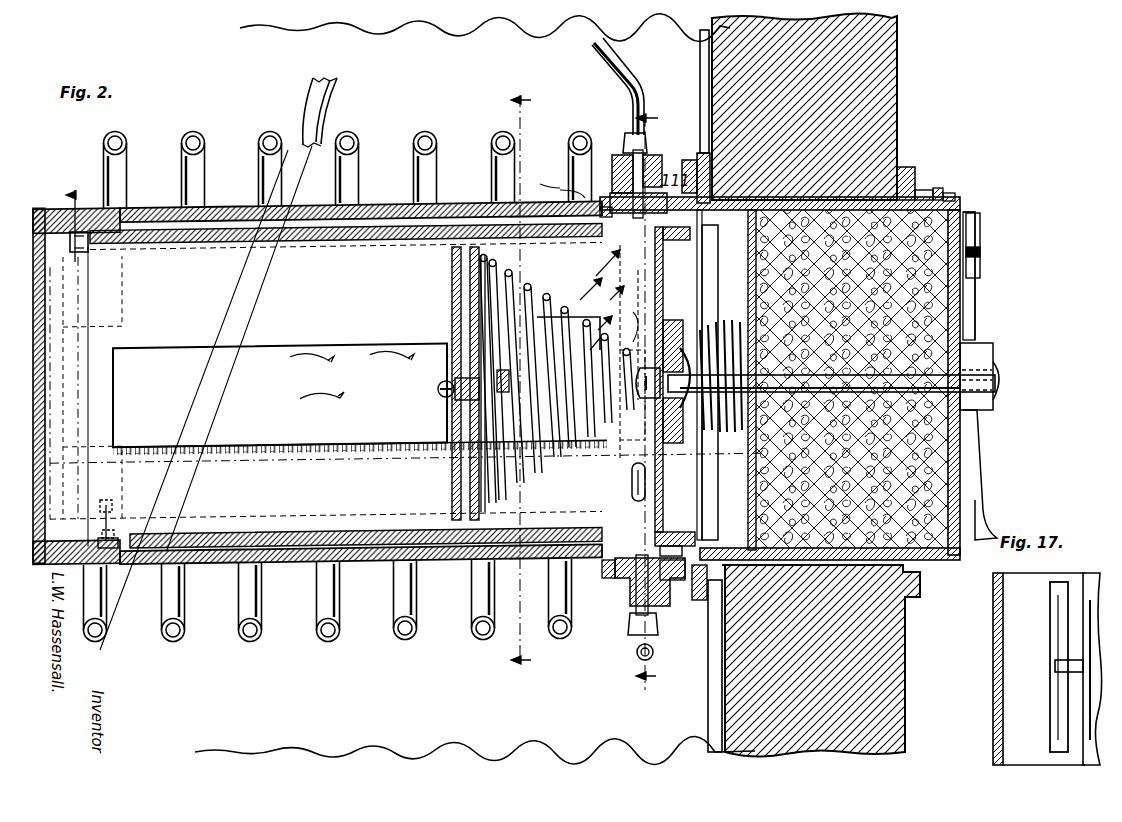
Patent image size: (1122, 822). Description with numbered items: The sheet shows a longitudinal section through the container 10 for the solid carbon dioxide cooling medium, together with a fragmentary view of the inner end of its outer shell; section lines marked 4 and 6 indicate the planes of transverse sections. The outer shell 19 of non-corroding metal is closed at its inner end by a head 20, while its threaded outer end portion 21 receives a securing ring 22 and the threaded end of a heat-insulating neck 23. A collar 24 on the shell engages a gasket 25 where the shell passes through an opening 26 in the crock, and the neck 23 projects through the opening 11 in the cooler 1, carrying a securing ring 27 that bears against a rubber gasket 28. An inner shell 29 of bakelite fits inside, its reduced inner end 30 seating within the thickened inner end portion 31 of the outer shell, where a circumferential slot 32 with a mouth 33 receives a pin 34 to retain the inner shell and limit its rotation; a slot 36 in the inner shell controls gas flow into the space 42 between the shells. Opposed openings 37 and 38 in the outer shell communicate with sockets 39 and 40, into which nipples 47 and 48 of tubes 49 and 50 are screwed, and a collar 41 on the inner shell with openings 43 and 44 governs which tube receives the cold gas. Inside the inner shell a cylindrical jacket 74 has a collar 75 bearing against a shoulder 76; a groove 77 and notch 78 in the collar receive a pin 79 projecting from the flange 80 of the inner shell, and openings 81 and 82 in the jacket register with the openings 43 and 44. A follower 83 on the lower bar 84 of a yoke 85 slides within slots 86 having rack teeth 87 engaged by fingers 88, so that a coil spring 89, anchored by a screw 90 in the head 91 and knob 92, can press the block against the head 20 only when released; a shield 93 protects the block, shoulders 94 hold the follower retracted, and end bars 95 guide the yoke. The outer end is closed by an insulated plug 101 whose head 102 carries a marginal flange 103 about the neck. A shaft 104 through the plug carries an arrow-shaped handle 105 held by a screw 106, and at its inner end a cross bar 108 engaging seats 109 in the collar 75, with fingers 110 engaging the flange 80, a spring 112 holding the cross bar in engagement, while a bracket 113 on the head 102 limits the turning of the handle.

In FIG. 2, the cooler 1 is at (890, 58).
In FIG. 2, the section line 4- 4 is at (521, 383).
In FIG. 2, the section line 6- 6 is at (655, 403).
In FIG. 2, the container 10 is at (77, 216).
In FIG. 2, the opening 11 is at (905, 600).
In FIG. 2, the outer shell 19 is at (462, 204).
In FIG. 17, the outer shell 19 is at (1090, 579).
In FIG. 17, the head 20 is at (993, 718).
In FIG. 2, the outer end portion 21 is at (750, 178).
In FIG. 2, the securing ring 22 is at (750, 150).
In FIG. 2, the neck 23 is at (835, 225).
In FIG. 2, the collar 24 is at (688, 165).
In FIG. 2, the gasket 25 is at (700, 600).
In FIG. 2, the opening 26 is at (702, 152).
In FIG. 2, the securing ring 27 is at (934, 188).
In FIG. 2, the rubber gasket 28 is at (907, 166).
In FIG. 2, the inner shell 29 is at (373, 223).
In FIG. 2, the reduced inner end 30 is at (88, 252).
In FIG. 2, the thickened inner end portion 31 is at (122, 210).
In FIG. 17, the thickened inner end portion 31 is at (1003, 658).
In FIG. 2, the slot 32 is at (110, 620).
In FIG. 17, the slot 32 is at (1055, 620).
In FIG. 2, the mouth 33 is at (113, 550).
In FIG. 17, the mouth 33 is at (1058, 678).
In FIG. 2, the pin 34 is at (110, 533).
In FIG. 2, the slot 36 is at (40, 205).
In FIG. 2, the opening 37 is at (612, 194).
In FIG. 2, the opening 38 is at (620, 577).
In FIG. 2, the socket 39 is at (615, 156).
In FIG. 2, the socket 40 is at (608, 596).
In FIG. 2, the collar 41 is at (560, 186).
In FIG. 2, the space 42 is at (222, 225).
In FIG. 2, the opening 43 is at (597, 272).
In FIG. 2, the opening 44 is at (632, 498).
In FIG. 2, the nipple 47 is at (627, 132).
In FIG. 2, the nipple 48 is at (630, 628).
In FIG. 2, the tube 49 is at (622, 68).
In FIG. 2, the tube 50 is at (343, 105).
In FIG. 2, the cylindrical jacket 74 is at (374, 560).
In FIG. 2, the collar 75 is at (693, 500).
In FIG. 2, the shoulder 76 is at (598, 308).
In FIG. 2, the groove 77 is at (665, 240).
In FIG. 2, the notch 78 is at (630, 510).
In FIG. 2, the pin 79 is at (695, 545).
In FIG. 2, the flange 80 is at (675, 582).
In FIG. 2, the opening 81 is at (644, 335).
In FIG. 2, the opening 82 is at (632, 472).
In FIG. 2, the follower 83 is at (453, 292).
In FIG. 2, the lower bar 84 is at (458, 405).
In FIG. 2, the yoke 85 is at (450, 390).
In FIG. 2, the slots 86 is at (328, 340).
In FIG. 2, the rack teeth 87 is at (298, 450).
In FIG. 2, the fingers 88 is at (460, 452).
In FIG. 2, the coil spring 89 is at (545, 492).
In FIG. 2, the screw 90 is at (633, 352).
In FIG. 2, the head 91 is at (685, 309).
In FIG. 2, the knob 92 is at (690, 338).
In FIG. 2, the shield 93 is at (470, 317).
In FIG. 2, the shoulder 94 is at (536, 302).
In FIG. 2, the end bars 95 is at (498, 408).
In FIG. 2, the plug 101 is at (810, 507).
In FIG. 2, the head 102 is at (905, 275).
In FIG. 2, the marginal flange 103 is at (948, 190).
In FIG. 2, the shaft 104 is at (856, 371).
In FIG. 2, the handle 105 is at (990, 360).
In FIG. 2, the screw 106 is at (1005, 368).
In FIG. 2, the cross bar 108 is at (702, 265).
In FIG. 2, the seats 109 is at (760, 228).
In FIG. 2, the fingers 110 is at (735, 210).
In FIG. 2, the spring 112 is at (756, 321).
In FIG. 2, the bracket 113 is at (978, 310).